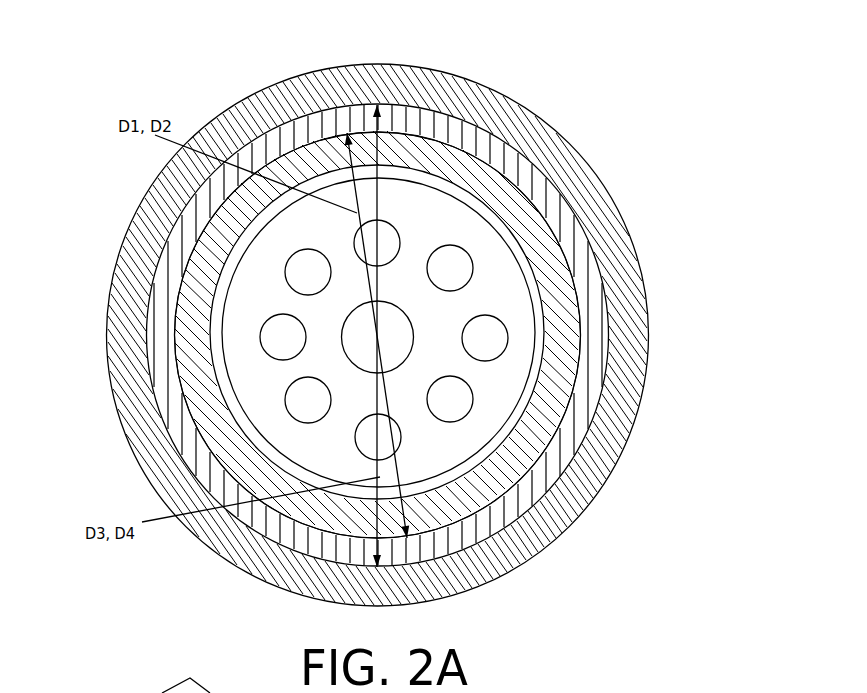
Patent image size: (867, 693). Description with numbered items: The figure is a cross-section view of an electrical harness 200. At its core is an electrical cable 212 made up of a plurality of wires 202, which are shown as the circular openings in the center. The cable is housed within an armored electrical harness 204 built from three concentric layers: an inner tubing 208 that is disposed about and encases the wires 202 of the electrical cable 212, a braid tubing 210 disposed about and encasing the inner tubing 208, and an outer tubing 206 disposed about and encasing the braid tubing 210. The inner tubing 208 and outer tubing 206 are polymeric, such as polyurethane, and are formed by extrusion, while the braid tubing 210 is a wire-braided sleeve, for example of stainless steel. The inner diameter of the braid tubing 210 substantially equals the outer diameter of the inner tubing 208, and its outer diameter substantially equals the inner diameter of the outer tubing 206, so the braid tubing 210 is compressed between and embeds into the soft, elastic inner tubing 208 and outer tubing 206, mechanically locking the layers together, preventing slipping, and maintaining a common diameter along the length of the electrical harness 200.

The electrical harness 200 is at (388, 311).
The wires 202 is at (460, 407).
The armored electrical harness 204 is at (553, 130).
The outer tubing 206 is at (585, 178).
The inner tubing 208 is at (544, 248).
The braid tubing 210 is at (595, 312).
The electrical cable 212 is at (228, 265).